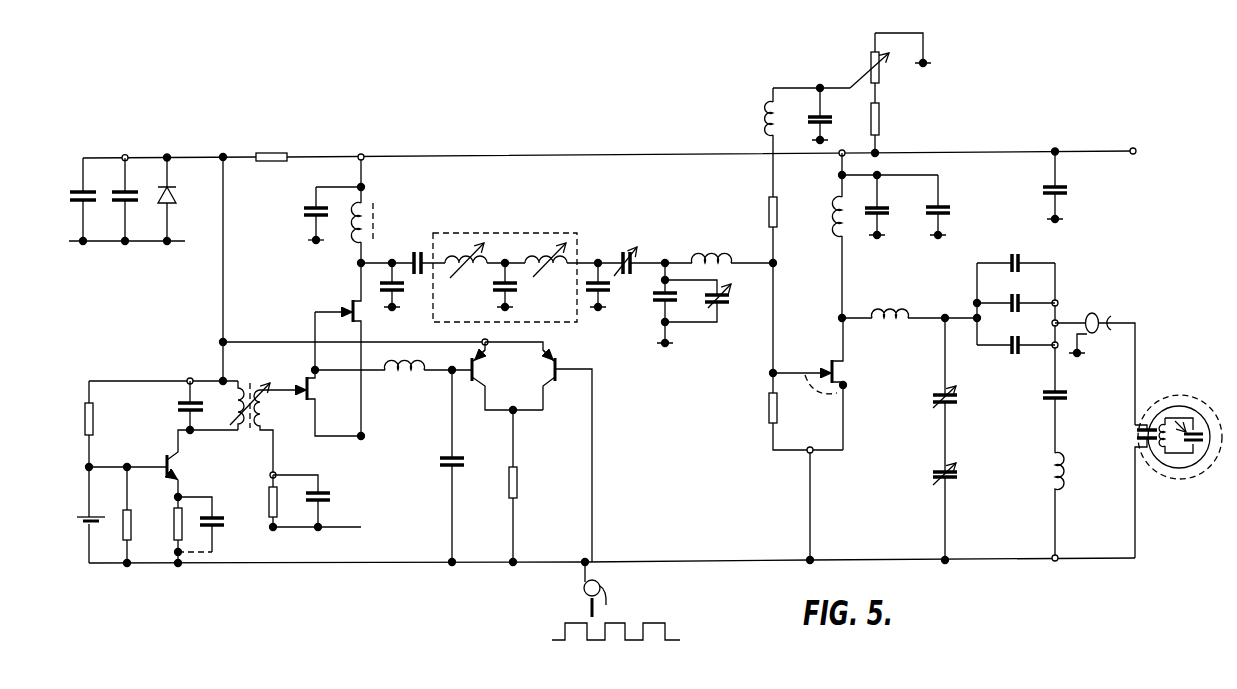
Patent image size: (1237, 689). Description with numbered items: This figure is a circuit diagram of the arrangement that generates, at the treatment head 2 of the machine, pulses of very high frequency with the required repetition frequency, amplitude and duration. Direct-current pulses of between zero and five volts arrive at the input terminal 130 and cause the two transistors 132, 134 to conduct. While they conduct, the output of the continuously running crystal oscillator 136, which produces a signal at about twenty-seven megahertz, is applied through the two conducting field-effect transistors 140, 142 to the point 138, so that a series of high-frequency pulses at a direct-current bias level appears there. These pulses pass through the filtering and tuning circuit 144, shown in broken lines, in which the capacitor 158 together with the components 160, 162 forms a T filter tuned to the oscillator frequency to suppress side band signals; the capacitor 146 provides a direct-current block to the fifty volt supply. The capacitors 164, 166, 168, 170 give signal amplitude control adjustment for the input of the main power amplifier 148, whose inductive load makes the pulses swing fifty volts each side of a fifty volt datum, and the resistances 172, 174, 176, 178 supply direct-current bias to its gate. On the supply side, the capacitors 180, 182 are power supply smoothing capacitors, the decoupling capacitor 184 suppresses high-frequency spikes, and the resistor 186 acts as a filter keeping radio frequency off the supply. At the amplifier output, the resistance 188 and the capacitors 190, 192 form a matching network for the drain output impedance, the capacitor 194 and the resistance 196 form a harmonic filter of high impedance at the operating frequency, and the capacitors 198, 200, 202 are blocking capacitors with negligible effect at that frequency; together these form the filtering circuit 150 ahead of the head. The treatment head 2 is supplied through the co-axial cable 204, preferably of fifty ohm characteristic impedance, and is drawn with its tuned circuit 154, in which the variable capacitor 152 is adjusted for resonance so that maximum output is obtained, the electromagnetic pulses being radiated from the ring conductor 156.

The treatment head 2 is at (1158, 470).
The input terminal 130 is at (645, 617).
The transistor 132 is at (563, 386).
The transistor 134 is at (470, 381).
The crystal oscillator 136 is at (118, 500).
The point in the circuit 138 is at (340, 281).
The field-effect transistor 140 is at (305, 378).
The field-effect transistor 142 is at (358, 314).
The filtering and tuning circuit 144 is at (482, 233).
The capacitor 146 is at (413, 257).
The main power amplifier 148 is at (846, 382).
The filtering circuit 150 is at (1066, 271).
The variable capacitor 152 is at (1202, 447).
The probe tuning capacitor 154 is at (1180, 420).
The ring conductor 156 is at (1160, 407).
The capacitor 158 is at (497, 292).
The component 160 is at (448, 252).
The component 162 is at (551, 272).
The capacitor 164 is at (592, 306).
The capacitor 166 is at (619, 256).
The capacitor 168 is at (660, 296).
The capacitor 170 is at (726, 308).
The resistance 172 is at (868, 66).
The resistance 174 is at (886, 121).
The resistance 176 is at (766, 206).
The resistance 178 is at (766, 408).
The power supply smoothing capacitor 180 is at (945, 207).
The power supply smoothing capacitor 182 is at (1045, 184).
The decoupling capacitor 184 is at (884, 213).
The resistor 186 is at (833, 217).
The resistance 188 is at (873, 313).
The capacitor 190 is at (930, 400).
The capacitor 192 is at (930, 475).
The capacitor 194 is at (1044, 397).
The resistance 196 is at (1052, 467).
The blocking capacitor 198 is at (1006, 257).
The blocking capacitor 200 is at (1006, 300).
The blocking capacitor 202 is at (1008, 351).
The co-axial cable 204 is at (1137, 443).